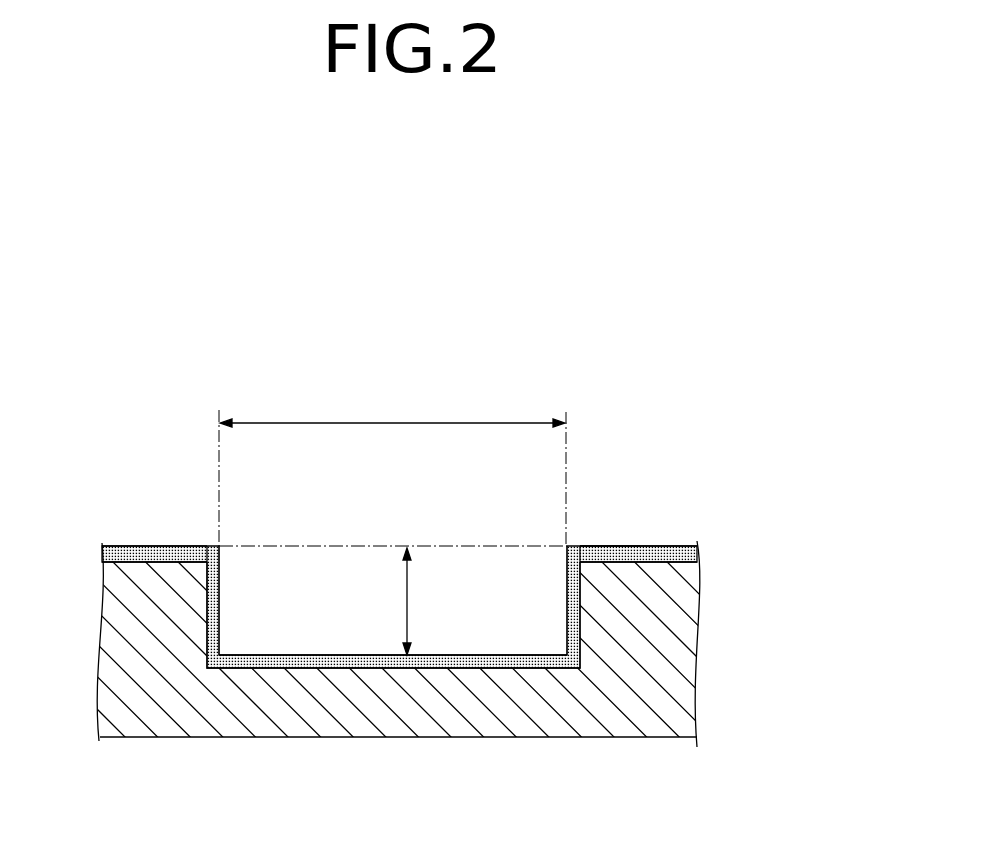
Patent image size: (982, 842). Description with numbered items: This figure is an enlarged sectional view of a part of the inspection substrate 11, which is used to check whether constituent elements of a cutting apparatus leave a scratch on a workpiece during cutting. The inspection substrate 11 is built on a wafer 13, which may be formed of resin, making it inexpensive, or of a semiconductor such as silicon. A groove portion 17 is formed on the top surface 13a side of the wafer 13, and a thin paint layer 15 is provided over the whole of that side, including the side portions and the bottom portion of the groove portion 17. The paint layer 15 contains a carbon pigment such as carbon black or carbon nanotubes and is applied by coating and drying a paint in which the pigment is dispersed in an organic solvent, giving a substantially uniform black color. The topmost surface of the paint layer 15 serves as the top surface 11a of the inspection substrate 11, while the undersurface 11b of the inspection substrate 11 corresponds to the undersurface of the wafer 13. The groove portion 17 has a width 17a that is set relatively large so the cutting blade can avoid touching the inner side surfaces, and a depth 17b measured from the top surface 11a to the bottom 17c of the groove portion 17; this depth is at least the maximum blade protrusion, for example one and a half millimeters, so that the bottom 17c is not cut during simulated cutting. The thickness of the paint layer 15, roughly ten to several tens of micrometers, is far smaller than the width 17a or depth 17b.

The inspection substrate 11 is at (434, 613).
The top surface 11a is at (143, 546).
The undersurface 11b is at (145, 738).
The wafer 13 is at (683, 668).
The top surface 13a is at (607, 549).
The paint layer 15 is at (439, 574).
The groove portion 17 is at (392, 538).
The width 17a is at (383, 422).
The depth 17b is at (402, 612).
The bottom 17c is at (467, 655).